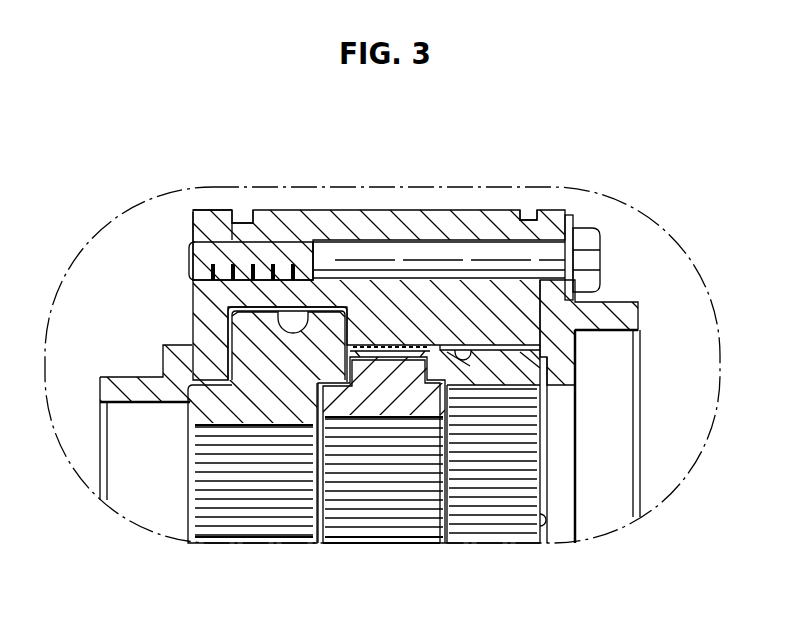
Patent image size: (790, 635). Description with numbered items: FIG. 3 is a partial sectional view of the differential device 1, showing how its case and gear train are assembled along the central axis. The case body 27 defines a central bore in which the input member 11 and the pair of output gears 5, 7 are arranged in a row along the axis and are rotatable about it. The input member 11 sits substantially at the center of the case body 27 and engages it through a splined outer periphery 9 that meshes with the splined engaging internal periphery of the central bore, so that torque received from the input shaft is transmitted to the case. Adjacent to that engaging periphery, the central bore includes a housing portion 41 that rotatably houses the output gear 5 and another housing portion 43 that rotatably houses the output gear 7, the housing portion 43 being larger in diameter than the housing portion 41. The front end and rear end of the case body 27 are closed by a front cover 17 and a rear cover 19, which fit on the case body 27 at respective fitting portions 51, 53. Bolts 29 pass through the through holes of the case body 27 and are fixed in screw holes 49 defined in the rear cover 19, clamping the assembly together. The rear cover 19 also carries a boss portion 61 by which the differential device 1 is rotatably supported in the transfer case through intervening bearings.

The differential device 1 is at (642, 136).
The output gear 5 is at (514, 378).
The output gear 7 is at (286, 372).
The splined outer periphery 9 is at (375, 345).
The input member 11 is at (404, 399).
The front cover 17 is at (550, 208).
The rear cover 19 is at (201, 222).
The case body 27 is at (410, 204).
The bolt 29 is at (588, 258).
The housing portion 41 is at (463, 347).
The housing portion 43 is at (297, 320).
The screw hole 49 is at (191, 245).
The fitting portion 51 is at (531, 203).
The fitting portion 53 is at (243, 203).
The boss portion 61 is at (140, 384).